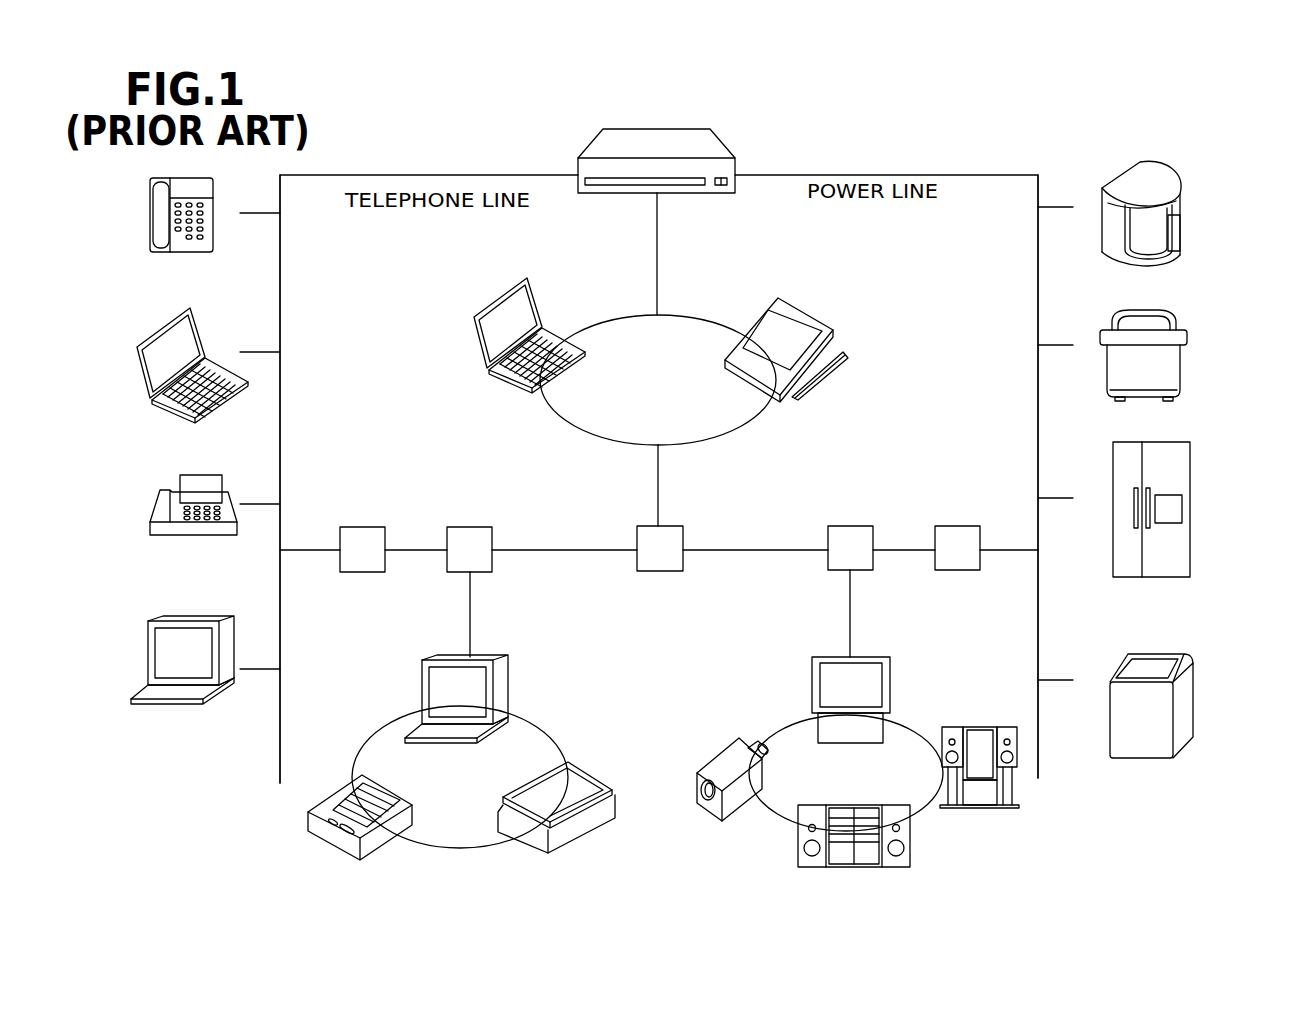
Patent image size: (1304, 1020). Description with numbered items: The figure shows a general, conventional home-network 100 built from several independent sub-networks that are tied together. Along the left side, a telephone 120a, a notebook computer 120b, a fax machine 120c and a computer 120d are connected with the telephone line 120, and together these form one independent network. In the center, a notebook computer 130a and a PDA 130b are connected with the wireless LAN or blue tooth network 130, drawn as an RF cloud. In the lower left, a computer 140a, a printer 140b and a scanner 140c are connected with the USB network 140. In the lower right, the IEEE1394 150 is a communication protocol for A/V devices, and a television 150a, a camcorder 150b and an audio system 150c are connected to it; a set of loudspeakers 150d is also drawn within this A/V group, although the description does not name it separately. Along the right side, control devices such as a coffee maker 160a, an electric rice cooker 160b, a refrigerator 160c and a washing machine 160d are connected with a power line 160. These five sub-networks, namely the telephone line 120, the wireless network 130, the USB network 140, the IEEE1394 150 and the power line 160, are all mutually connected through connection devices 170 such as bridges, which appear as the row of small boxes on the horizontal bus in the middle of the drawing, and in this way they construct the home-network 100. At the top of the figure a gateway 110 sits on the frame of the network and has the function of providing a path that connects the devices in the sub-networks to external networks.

The home-network 100 is at (797, 108).
The gateway 110 is at (657, 128).
The telephone line 120 is at (340, 175).
The telephone 120a is at (155, 252).
The notebook computer 120b is at (162, 396).
The fax machine 120c is at (163, 531).
The computer 120d is at (165, 703).
The wireless LAN or blue tooth network 130 is at (737, 433).
The notebook computer 130a is at (494, 368).
The PDA 130b is at (803, 333).
The USB network 140 is at (548, 728).
The computer 140a is at (422, 689).
The printer 140b is at (333, 838).
The scanner 140c is at (573, 830).
The IEEE1394 150 is at (920, 715).
The television 150a is at (825, 685).
The camcorder 150b is at (712, 806).
The audio system 150c is at (800, 856).
The speaker system 150d is at (978, 795).
The power line 160 is at (934, 175).
The coffee maker 160a is at (1185, 245).
The electric rice cooker 160b is at (1172, 373).
The refrigerator 160c is at (1185, 531).
The washing machine 160d is at (1178, 725).
The connection devices 170 is at (646, 526).